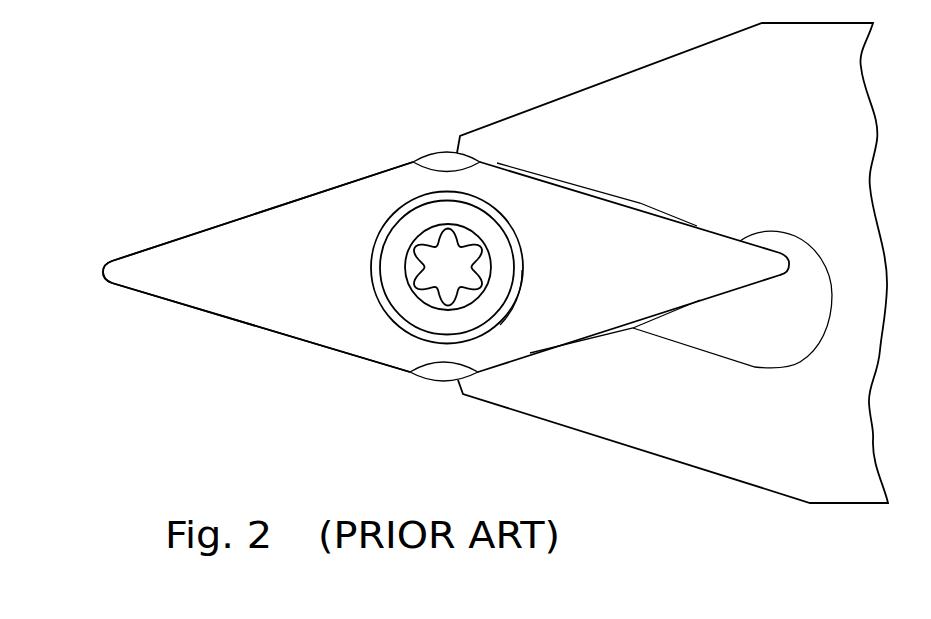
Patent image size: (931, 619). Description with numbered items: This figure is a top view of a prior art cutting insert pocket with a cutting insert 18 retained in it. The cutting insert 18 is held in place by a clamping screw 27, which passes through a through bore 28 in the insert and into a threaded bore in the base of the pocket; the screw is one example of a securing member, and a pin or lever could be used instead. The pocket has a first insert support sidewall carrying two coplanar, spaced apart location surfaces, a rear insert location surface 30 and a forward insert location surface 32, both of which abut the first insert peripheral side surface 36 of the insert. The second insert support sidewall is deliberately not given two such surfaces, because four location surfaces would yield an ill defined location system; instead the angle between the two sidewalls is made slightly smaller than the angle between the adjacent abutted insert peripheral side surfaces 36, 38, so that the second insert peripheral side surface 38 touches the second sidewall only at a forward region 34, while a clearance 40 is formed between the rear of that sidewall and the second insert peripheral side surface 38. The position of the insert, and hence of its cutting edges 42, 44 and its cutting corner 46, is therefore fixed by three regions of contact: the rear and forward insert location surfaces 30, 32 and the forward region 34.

The cutting insert 18 is at (213, 260).
The clamping screw 27 is at (407, 302).
The through bore 28 is at (377, 260).
The rear insert location surface 30 is at (717, 235).
The forward insert location surface 32 is at (418, 163).
The forward region 34 is at (410, 372).
The first insert peripheral side surface 36 is at (593, 190).
The second insert peripheral side surface 38 is at (700, 307).
The clearance 40 is at (634, 328).
The cutting edge 42 is at (273, 205).
The cutting edge 44 is at (150, 297).
The cutting corner 46 is at (100, 268).